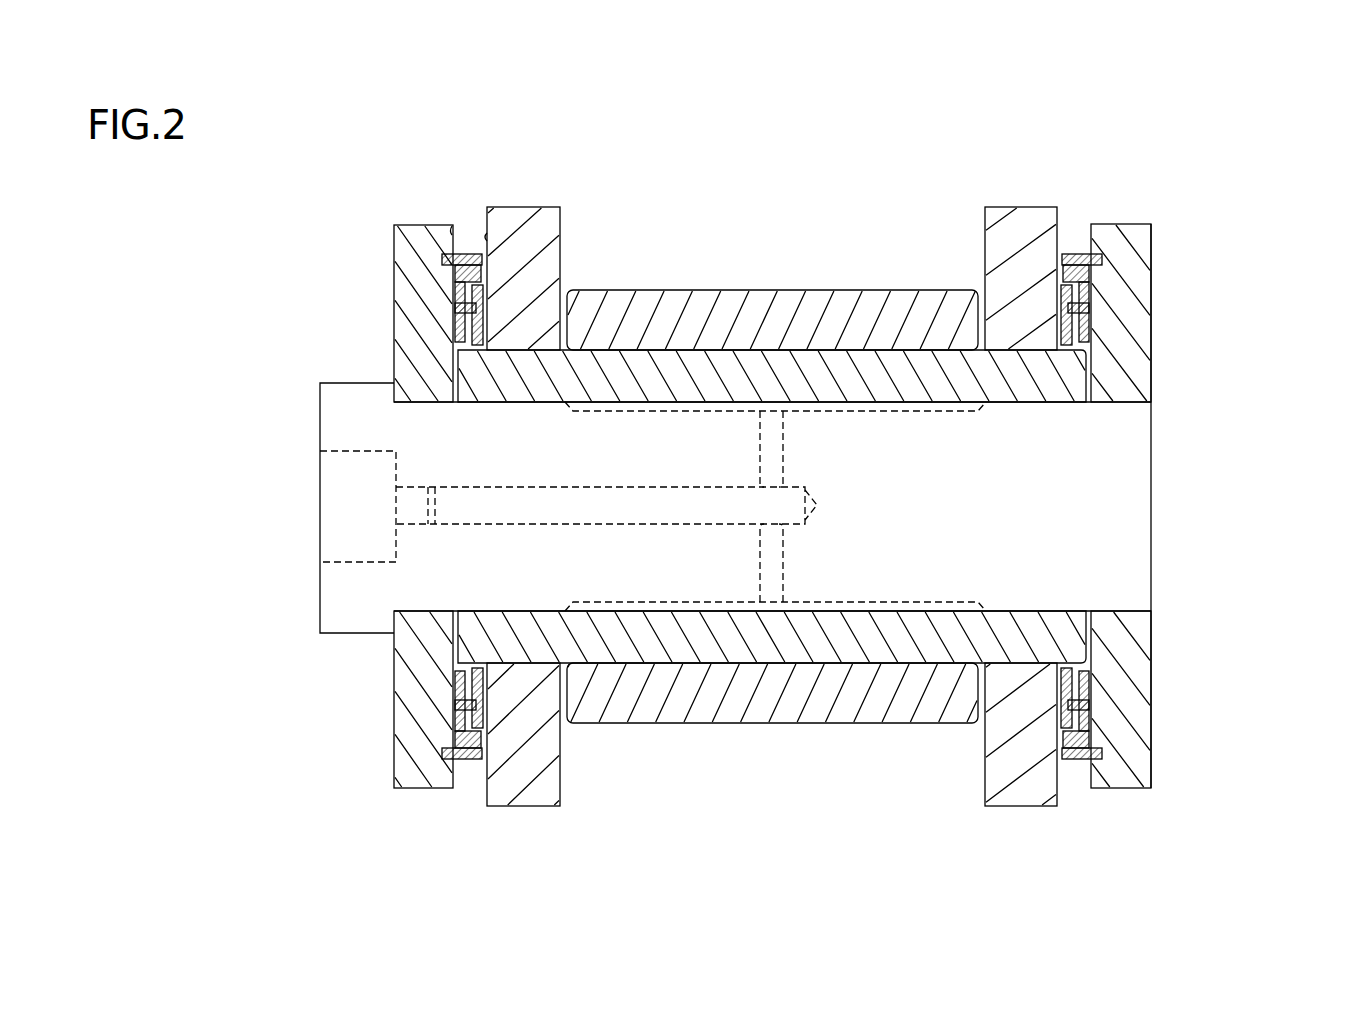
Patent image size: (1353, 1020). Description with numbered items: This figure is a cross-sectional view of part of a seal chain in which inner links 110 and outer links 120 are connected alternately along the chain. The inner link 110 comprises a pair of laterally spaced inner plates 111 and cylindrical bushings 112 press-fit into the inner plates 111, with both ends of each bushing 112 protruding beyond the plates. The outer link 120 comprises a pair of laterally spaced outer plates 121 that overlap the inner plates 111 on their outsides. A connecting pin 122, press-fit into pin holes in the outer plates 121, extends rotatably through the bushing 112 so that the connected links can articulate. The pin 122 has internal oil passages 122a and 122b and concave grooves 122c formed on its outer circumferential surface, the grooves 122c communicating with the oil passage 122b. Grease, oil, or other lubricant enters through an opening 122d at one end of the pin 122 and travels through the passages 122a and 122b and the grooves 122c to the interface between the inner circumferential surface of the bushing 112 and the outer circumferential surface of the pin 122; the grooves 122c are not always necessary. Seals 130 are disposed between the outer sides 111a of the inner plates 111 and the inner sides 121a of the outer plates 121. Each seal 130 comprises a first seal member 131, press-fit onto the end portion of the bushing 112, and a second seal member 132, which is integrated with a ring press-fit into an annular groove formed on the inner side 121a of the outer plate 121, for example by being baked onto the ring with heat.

The inner link 110 is at (248, 272).
The inner plate 111 is at (503, 321).
The outer side of inner plate 111a is at (485, 237).
The cylindrical bushing 112 is at (480, 397).
The outer link 120 is at (1252, 355).
The outer plate 121 is at (1133, 370).
The inner side of outer plate 121a is at (452, 231).
The connecting pin 122 is at (1125, 465).
The internal oil passage 122a is at (478, 513).
The internal oil passage 122b is at (773, 552).
The concave groove 122c is at (705, 607).
The opening 122d is at (290, 503).
The seal 130 is at (578, 140).
The first seal member 131 is at (483, 257).
The second seal member 132 is at (463, 258).